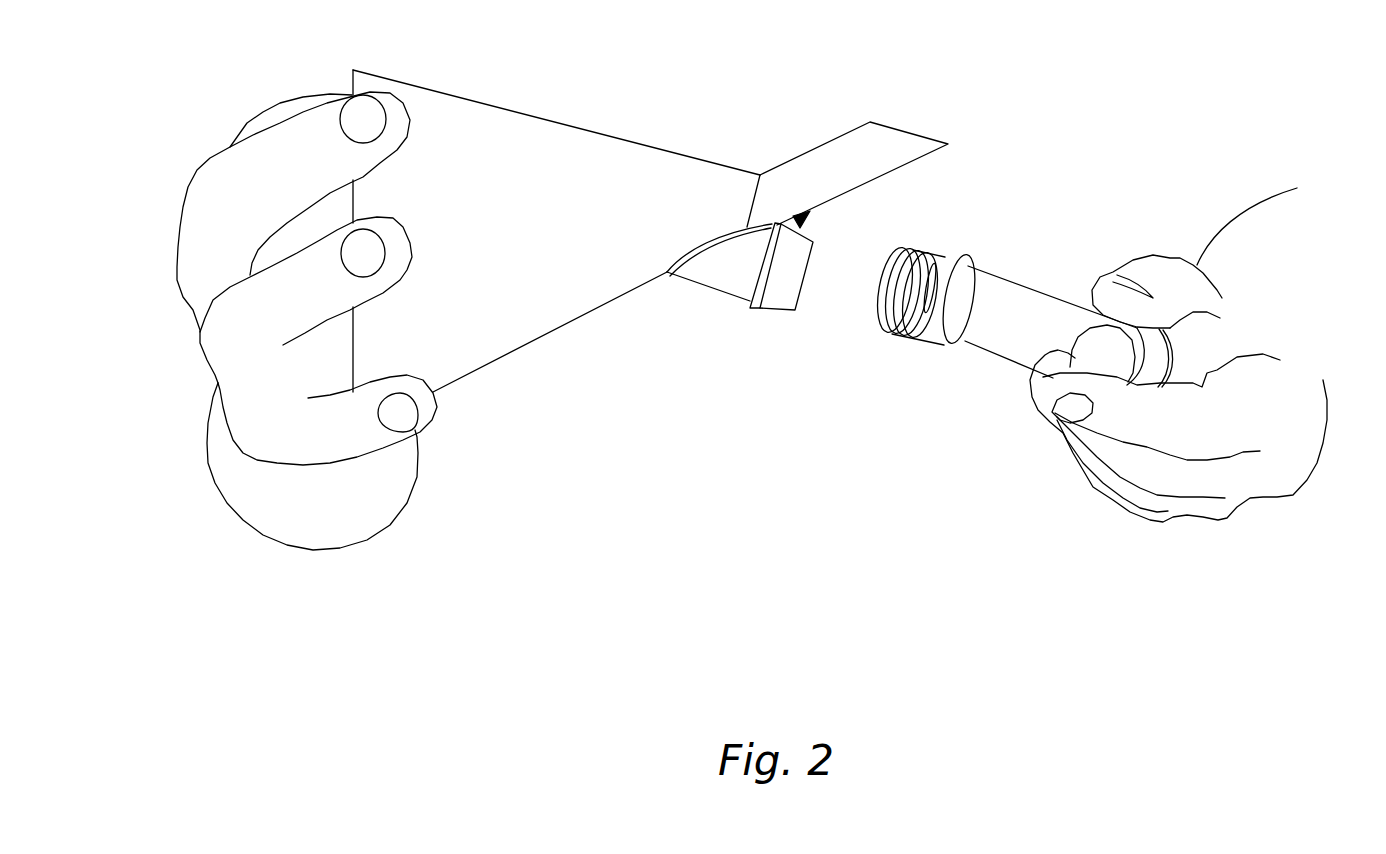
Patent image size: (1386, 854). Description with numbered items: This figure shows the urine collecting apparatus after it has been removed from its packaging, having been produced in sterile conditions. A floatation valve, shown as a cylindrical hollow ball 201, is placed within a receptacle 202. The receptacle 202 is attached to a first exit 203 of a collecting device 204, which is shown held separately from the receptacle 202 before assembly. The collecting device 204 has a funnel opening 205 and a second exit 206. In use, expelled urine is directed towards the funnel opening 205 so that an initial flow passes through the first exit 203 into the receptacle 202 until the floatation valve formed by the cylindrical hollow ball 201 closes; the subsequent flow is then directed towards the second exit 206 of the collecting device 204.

The cylindrical hollow ball 201 is at (1075, 357).
The receptacle 202 is at (1007, 287).
The first exit 203 is at (787, 297).
The collecting device 204 is at (713, 103).
The funnel opening 205 is at (530, 127).
The second exit 206 is at (877, 133).